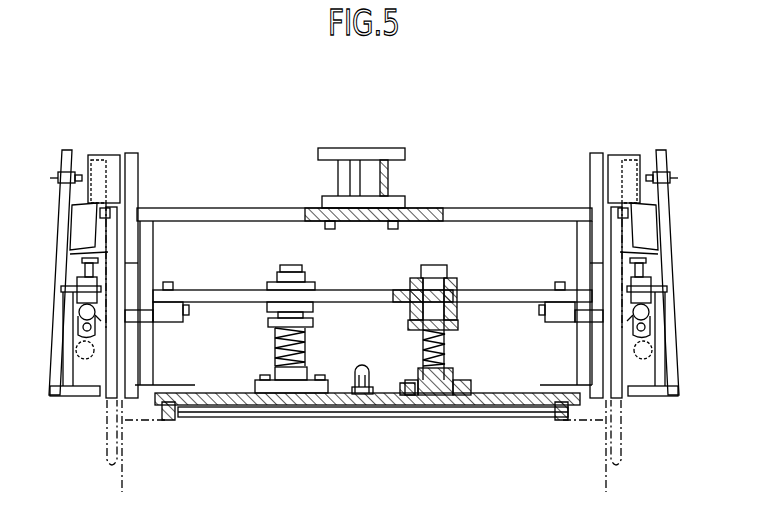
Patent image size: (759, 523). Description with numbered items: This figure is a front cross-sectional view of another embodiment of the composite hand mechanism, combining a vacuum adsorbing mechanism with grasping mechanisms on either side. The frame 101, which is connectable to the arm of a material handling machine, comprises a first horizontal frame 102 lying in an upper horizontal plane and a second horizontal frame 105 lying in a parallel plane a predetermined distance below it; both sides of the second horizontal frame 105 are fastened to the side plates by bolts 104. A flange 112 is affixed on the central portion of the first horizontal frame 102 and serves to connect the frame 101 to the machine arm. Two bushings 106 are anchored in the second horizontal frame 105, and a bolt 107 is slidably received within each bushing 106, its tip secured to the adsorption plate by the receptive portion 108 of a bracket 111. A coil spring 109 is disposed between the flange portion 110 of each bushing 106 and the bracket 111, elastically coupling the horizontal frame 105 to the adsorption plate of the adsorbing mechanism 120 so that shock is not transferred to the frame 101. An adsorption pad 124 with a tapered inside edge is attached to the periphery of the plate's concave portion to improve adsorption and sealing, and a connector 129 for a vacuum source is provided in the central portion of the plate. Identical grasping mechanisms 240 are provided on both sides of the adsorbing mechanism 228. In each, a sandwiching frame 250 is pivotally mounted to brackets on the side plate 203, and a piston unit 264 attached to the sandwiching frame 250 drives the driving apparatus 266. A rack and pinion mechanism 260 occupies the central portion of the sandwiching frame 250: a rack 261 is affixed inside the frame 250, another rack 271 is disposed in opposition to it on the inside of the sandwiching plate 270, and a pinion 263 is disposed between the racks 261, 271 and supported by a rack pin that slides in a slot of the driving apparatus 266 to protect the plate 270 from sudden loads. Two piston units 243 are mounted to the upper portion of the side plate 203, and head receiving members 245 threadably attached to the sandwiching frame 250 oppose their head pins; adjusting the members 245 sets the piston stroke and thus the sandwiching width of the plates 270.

The frame 101 is at (232, 183).
The first horizontal frame 102 is at (282, 208).
The bolts 104 is at (558, 282).
The second horizontal frame 105 is at (252, 262).
The bushings 106 is at (455, 278).
The bolt 107 is at (440, 265).
The receptive portion 108 is at (460, 380).
The coil spring 109 is at (447, 348).
The flange portion 110 is at (458, 328).
The bracket 111 is at (400, 383).
The flange 112 is at (405, 158).
The adsorbing mechanism 120 is at (407, 420).
The adsorption pad 124 is at (172, 420).
The connector 129 is at (360, 370).
The side plate 203 is at (138, 180).
The adsorbing mechanism 228 is at (285, 420).
The grasping mechanisms 240 is at (106, 146).
The piston units 243 is at (118, 165).
The head receiving members 245 is at (58, 177).
The sandwiching frame 250 is at (62, 192).
The rack and pinion mechanism 260 is at (80, 372).
The rack 261 is at (70, 345).
The pinion 263 is at (87, 313).
The piston unit 264 is at (85, 240).
The driving apparatus 266 is at (80, 278).
The sandwiching plate 270 is at (118, 245).
The rack 271 is at (100, 320).